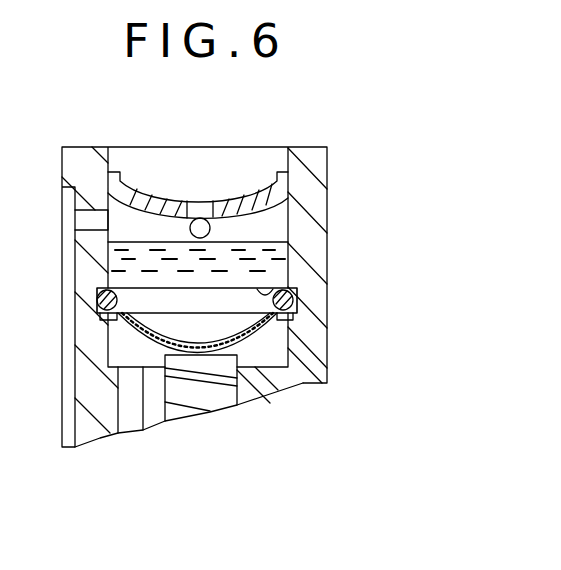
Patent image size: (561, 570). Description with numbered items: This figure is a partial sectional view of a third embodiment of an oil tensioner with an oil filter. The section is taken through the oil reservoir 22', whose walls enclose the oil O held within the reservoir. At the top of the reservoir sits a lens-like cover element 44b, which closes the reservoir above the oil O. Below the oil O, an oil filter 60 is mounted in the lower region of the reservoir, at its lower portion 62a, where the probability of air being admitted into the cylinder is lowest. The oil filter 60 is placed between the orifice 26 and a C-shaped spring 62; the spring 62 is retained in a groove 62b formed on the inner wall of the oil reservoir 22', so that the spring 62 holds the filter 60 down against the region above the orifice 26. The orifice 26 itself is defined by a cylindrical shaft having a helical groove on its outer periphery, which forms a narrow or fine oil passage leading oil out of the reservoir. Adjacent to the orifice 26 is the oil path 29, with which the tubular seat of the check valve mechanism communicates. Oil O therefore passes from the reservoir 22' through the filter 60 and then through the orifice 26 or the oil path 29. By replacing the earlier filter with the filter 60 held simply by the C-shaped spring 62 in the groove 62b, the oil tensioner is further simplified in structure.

The oil reservoir 22' is at (194, 269).
The lens 44b is at (257, 190).
The oil O is at (263, 242).
The groove 62b is at (275, 287).
The C-shaped spring 62 is at (295, 296).
The oil filter 60 is at (263, 361).
The lower portion 62a is at (305, 395).
The oil path 29 is at (131, 430).
The orifice 26 is at (232, 422).